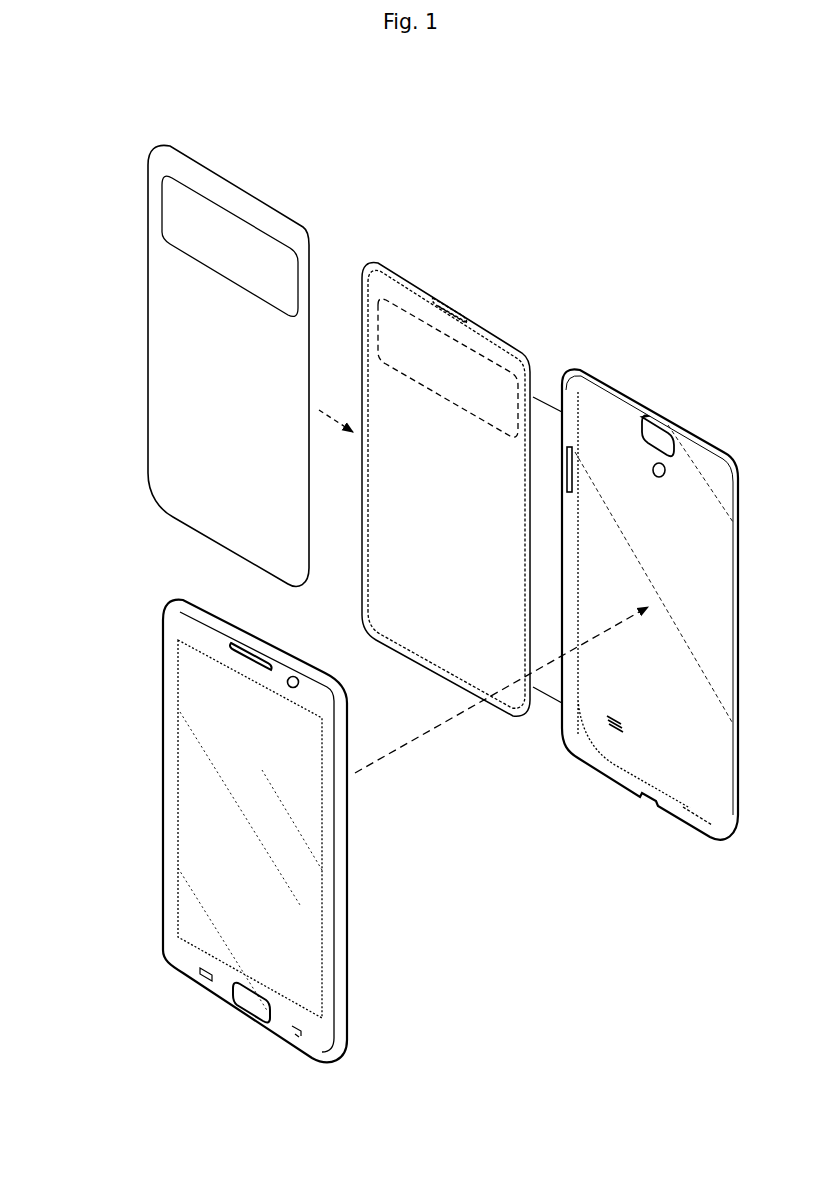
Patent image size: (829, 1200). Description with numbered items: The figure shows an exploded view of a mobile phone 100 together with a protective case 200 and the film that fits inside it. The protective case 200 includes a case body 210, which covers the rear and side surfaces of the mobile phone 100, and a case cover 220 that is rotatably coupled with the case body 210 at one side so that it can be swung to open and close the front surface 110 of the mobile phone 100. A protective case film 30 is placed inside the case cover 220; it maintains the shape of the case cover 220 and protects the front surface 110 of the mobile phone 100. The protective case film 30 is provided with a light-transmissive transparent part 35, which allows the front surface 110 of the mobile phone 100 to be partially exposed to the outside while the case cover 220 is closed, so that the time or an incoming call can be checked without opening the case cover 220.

The protective case film 30 is at (189, 345).
The transparent part 35 is at (168, 212).
The mobile phone 100 is at (213, 831).
The front surface 110 is at (192, 798).
The protective case 200 is at (560, 249).
The case body 210 is at (612, 405).
The case cover 220 is at (495, 316).